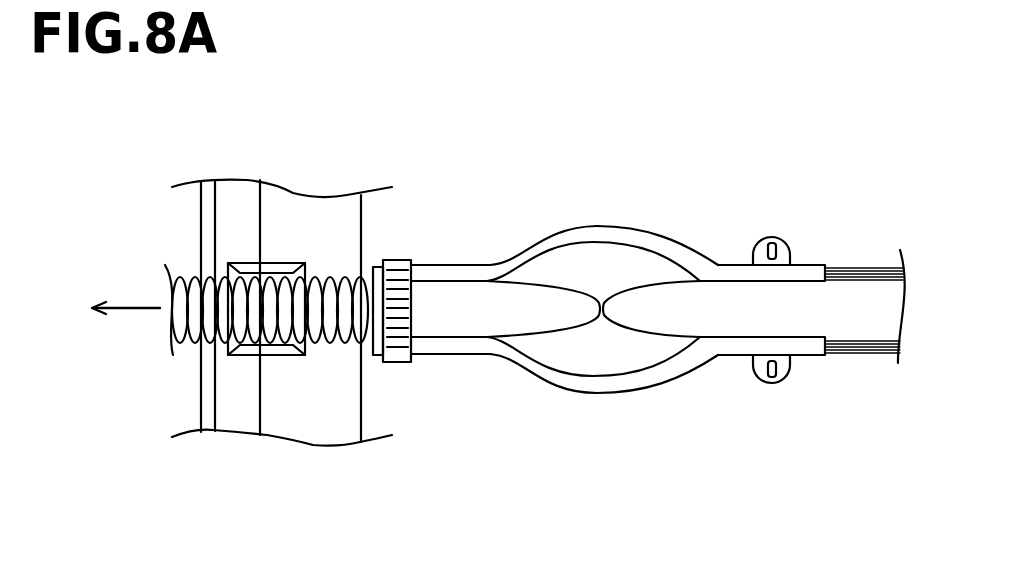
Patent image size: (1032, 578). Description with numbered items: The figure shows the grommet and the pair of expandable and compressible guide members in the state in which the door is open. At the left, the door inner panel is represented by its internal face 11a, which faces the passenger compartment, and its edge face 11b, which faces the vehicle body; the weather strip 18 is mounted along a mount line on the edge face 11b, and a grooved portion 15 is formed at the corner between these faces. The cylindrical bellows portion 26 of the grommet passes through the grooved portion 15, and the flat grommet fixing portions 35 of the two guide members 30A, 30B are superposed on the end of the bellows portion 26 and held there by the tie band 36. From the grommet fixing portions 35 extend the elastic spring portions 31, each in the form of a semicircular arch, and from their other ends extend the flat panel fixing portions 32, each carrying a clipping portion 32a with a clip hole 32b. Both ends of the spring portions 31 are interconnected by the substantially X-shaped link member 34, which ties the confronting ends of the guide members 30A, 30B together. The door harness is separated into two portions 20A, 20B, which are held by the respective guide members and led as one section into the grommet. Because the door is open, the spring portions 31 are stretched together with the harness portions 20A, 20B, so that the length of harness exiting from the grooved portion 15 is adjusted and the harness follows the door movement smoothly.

The internal face 11a is at (318, 420).
The edge face 11b is at (240, 415).
The grooved portion 15 is at (281, 267).
The weather strip 18 is at (210, 397).
The first door harness portion 20A is at (862, 265).
The second door harness portion 20B is at (857, 355).
The bellows portion 26 is at (333, 340).
The first expandable and compressible guide member 30A is at (527, 245).
The second expandable and compressible guide member 30B is at (572, 393).
The spring portion 31 is at (602, 227).
The panel fixing portion 32 is at (747, 347).
The clipping portion 32a is at (777, 237).
The clip hole 32b is at (785, 373).
The link member 34 is at (648, 277).
The grommet fixing portion 35 is at (458, 278).
The tie band 36 is at (400, 260).